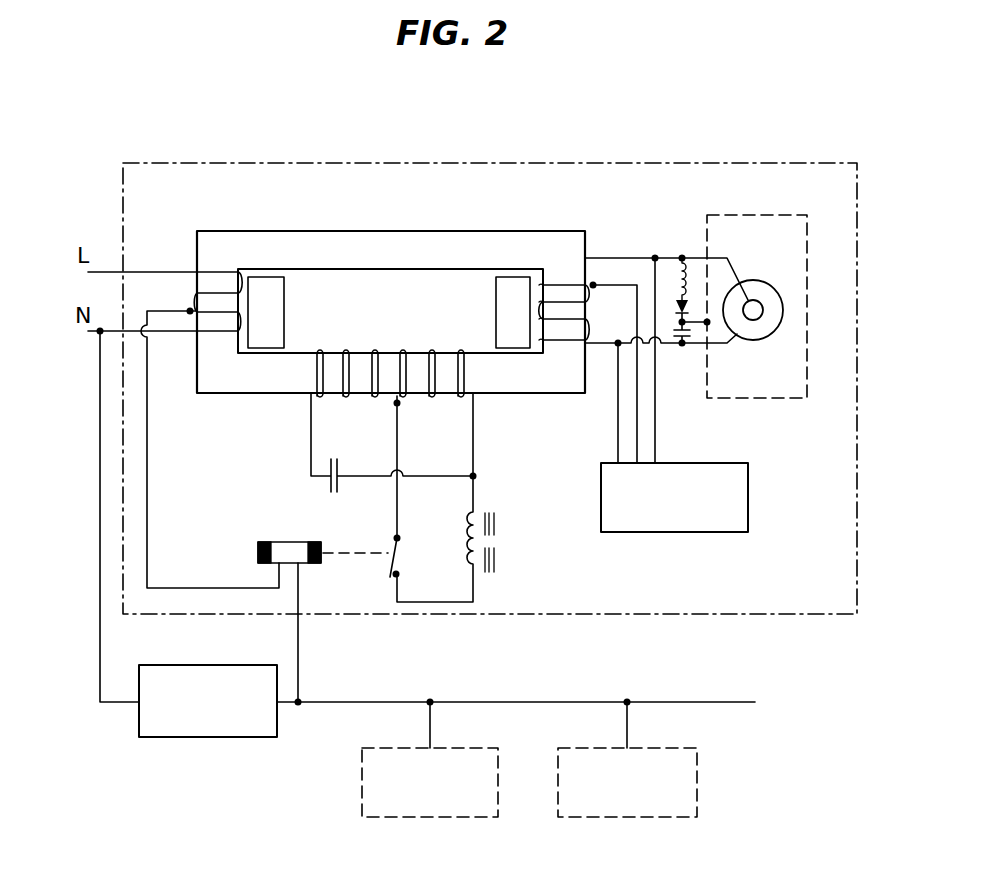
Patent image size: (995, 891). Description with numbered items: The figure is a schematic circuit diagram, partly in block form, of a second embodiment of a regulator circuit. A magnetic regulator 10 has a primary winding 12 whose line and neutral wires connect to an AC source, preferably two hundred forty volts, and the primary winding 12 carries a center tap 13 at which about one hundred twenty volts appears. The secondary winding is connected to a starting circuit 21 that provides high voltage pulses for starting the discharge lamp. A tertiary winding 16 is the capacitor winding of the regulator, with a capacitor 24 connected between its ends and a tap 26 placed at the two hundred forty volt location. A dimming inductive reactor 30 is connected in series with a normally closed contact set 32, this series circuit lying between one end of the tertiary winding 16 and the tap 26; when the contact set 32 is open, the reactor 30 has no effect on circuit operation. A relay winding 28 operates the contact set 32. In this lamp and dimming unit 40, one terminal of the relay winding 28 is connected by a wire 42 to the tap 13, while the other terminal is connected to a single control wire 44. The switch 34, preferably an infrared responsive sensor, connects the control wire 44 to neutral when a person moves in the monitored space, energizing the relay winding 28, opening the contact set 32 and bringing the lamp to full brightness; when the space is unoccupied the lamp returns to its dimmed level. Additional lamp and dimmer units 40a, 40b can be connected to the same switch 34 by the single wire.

The magnetic regulator 10 is at (426, 206).
The primary winding 12 is at (215, 273).
The center tap 13 is at (189, 308).
The tertiary winding 16 is at (344, 348).
The starting circuit 21 is at (750, 476).
The capacitor 24 is at (328, 486).
The tap 26 is at (399, 405).
The relay winding 28 is at (280, 540).
The dimming inductive reactor 30 is at (520, 541).
The normally closed contact set 32 is at (408, 551).
The switch 34 is at (228, 665).
The lamp and dimming unit 40 is at (570, 614).
The lamp and dimmer unit 40a is at (456, 747).
The lamp and dimmer unit 40b is at (651, 747).
The wire 42 is at (147, 476).
The control wire 44 is at (300, 668).